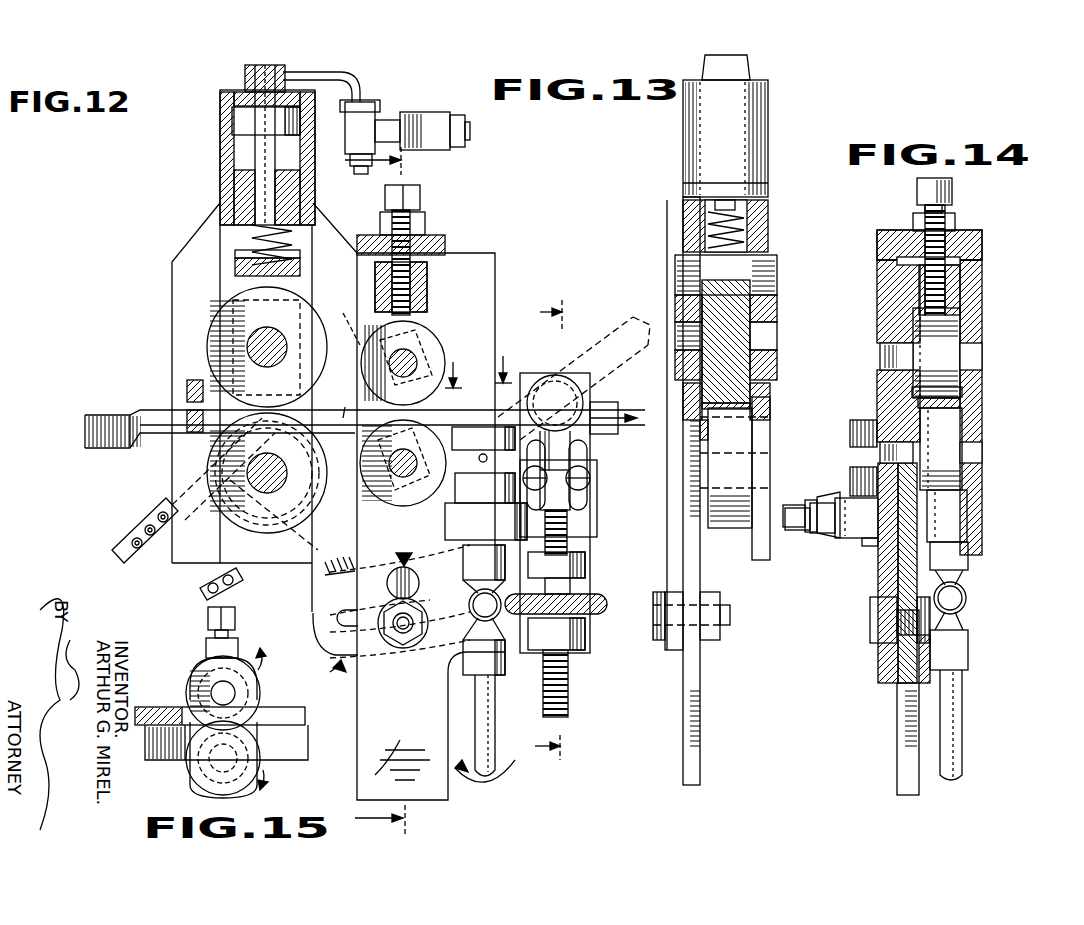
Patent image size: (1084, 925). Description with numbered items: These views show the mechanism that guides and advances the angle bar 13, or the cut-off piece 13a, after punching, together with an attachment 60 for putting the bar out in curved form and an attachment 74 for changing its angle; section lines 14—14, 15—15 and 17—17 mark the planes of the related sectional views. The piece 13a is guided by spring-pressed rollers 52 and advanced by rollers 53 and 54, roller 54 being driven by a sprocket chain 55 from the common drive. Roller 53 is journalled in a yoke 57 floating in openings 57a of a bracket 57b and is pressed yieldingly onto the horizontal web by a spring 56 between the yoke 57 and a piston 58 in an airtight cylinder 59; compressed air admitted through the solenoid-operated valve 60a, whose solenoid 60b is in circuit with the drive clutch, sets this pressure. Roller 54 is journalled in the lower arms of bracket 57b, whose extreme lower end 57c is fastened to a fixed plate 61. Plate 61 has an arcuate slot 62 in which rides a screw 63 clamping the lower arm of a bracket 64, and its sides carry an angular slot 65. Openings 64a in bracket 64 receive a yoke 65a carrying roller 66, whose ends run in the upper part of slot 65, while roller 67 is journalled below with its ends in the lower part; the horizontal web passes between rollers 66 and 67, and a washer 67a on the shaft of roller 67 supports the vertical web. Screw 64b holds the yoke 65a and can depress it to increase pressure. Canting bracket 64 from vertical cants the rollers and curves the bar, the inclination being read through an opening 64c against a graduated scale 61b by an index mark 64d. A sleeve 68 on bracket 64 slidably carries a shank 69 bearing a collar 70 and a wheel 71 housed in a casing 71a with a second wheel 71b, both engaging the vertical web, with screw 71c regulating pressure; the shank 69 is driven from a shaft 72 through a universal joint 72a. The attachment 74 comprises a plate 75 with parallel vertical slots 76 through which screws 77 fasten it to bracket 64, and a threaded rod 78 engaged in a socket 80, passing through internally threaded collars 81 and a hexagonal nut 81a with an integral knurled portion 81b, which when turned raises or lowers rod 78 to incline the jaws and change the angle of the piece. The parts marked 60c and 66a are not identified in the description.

In FIG. 12, the angle bar 13 is at (207, 165).
In FIG. 15, the angle bar 13 is at (300, 755).
In FIG. 13, the angle bar 13 is at (683, 396).
In FIG. 14, the angle bar 13 is at (898, 418).
In FIG. 12, the piece 13a is at (345, 407).
In FIG. 12, the section line 14— 14 is at (390, 491).
In FIG. 12, the section line 15— 15 is at (482, 361).
In FIG. 12, the section line 17— 17 is at (541, 524).
In FIG. 12, the spring-pressed rollers 52 is at (186, 391).
In FIG. 12, the roller 53 is at (232, 341).
In FIG. 13, the roller 53 is at (683, 384).
In FIG. 12, the roller 54 is at (248, 498).
In FIG. 13, the roller 54 is at (737, 440).
In FIG. 12, the sprocket chain 55 is at (136, 537).
In FIG. 12, the spring 56 is at (250, 236).
In FIG. 13, the spring 56 is at (745, 240).
In FIG. 12, the yoke 57 is at (236, 272).
In FIG. 13, the yoke 57 is at (770, 372).
In FIG. 12, the openings 57a is at (236, 256).
In FIG. 13, the openings 57a is at (762, 262).
In FIG. 13, the bracket 57b is at (748, 408).
In FIG. 12, the extreme lower end 57c is at (200, 570).
In FIG. 12, the piston 58 is at (245, 118).
In FIG. 12, the cylinder 59 is at (360, 168).
In FIG. 13, the cylinder 59 is at (768, 150).
In FIG. 12, the attachment 60 is at (321, 383).
In FIG. 12, the solenoid-operated valve 60a is at (412, 117).
In FIG. 12, the solenoid 60b is at (460, 135).
In FIG. 12, the pipe fitting 60c is at (346, 124).
In FIG. 12, the fixed plate 61 is at (330, 622).
In FIG. 13, the fixed plate 61 is at (670, 573).
In FIG. 14, the fixed plate 61 is at (883, 650).
In FIG. 12, the graduated scale 61b is at (340, 560).
In FIG. 12, the arcuate slot 62 is at (340, 618).
In FIG. 14, the arcuate slot 62 is at (895, 656).
In FIG. 12, the screw 63 is at (400, 640).
In FIG. 13, the screw 63 is at (655, 616).
In FIG. 14, the screw 63 is at (888, 614).
In FIG. 12, the bracket 64 is at (440, 298).
In FIG. 13, the bracket 64 is at (684, 700).
In FIG. 14, the bracket 64 is at (983, 243).
In FIG. 12, the openings 64a is at (430, 258).
In FIG. 14, the openings 64a is at (982, 260).
In FIG. 12, the screw 64b is at (420, 197).
In FIG. 14, the screw 64b is at (952, 190).
In FIG. 12, the opening 64c is at (420, 585).
In FIG. 12, the index mark 64d is at (398, 556).
In FIG. 12, the angular slot 65 is at (430, 315).
In FIG. 14, the angular slot 65 is at (882, 370).
In FIG. 14, the yoke 65a is at (972, 316).
In FIG. 12, the roller 66 is at (420, 345).
In FIG. 14, the roller 66 is at (943, 340).
In FIG. 12, the roller edge 66a is at (341, 325).
In FIG. 14, the roller edge 66a is at (977, 343).
In FIG. 12, the roller 67 is at (398, 498).
In FIG. 14, the roller 67 is at (940, 462).
In FIG. 14, the washer 67a is at (920, 437).
In FIG. 12, the collar or sleeve 68 is at (470, 510).
In FIG. 13, the collar or sleeve 68 is at (832, 490).
In FIG. 14, the collar or sleeve 68 is at (840, 483).
In FIG. 12, the shank 69 is at (465, 560).
In FIG. 12, the collar 70 is at (470, 462).
In FIG. 12, the wheel 71 is at (500, 417).
In FIG. 15, the wheel 71 is at (200, 770).
In FIG. 15, the casing 71a is at (207, 662).
In FIG. 15, the wheel 71b is at (188, 690).
In FIG. 15, the screw 71c is at (207, 619).
In FIG. 12, the shaft 72 is at (492, 715).
In FIG. 14, the shaft 72 is at (952, 705).
In FIG. 12, the universal joint 72a is at (478, 608).
In FIG. 12, the attachment 74 is at (568, 550).
In FIG. 12, the plate 75 is at (582, 525).
In FIG. 12, the parallel vertical slots 76 is at (582, 500).
In FIG. 12, the screws 77 is at (580, 470).
In FIG. 12, the threaded rod 78 is at (570, 675).
In FIG. 12, the socket 80 is at (578, 398).
In FIG. 12, the collars 81 is at (586, 567).
In FIG. 12, the hexagonal nut 81a is at (578, 590).
In FIG. 12, the knurled portion 81b is at (545, 590).